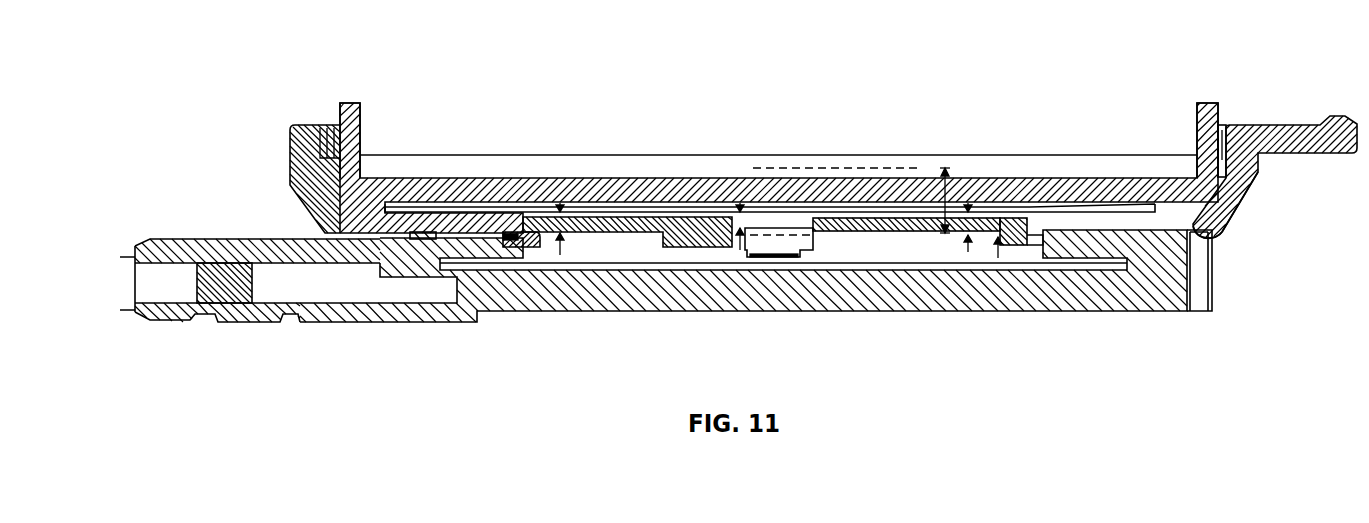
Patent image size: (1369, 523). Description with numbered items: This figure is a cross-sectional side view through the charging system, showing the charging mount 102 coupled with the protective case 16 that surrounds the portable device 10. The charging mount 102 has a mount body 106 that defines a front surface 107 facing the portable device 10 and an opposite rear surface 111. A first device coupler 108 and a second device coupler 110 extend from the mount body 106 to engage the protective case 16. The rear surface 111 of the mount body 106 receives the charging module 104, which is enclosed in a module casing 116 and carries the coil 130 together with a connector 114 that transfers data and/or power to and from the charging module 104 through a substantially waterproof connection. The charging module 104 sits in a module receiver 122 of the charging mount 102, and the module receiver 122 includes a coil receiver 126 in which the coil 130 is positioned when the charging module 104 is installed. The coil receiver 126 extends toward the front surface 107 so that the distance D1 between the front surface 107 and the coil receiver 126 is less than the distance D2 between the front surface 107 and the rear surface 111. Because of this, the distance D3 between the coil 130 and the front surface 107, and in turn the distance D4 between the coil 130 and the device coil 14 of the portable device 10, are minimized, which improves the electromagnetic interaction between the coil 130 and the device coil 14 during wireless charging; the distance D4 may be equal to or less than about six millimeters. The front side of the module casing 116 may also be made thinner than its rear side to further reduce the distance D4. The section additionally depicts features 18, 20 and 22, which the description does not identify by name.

The portable device 10 is at (928, 155).
The device coil 14 is at (780, 168).
The protective case 16 is at (1203, 103).
The clip portion 18 is at (1222, 125).
The seal 20 is at (335, 172).
The seal leg 22 is at (372, 218).
The charging mount 102 is at (1238, 205).
The charging module 104 is at (1113, 312).
The mount body 106 is at (1205, 233).
The front surface 107 is at (425, 207).
The first device coupler 108 is at (1300, 125).
The second device coupler 110 is at (310, 127).
The rear surface 111 is at (413, 239).
The connector 114 is at (210, 239).
The module casing 116 is at (528, 305).
The module receiver 122 is at (998, 240).
The coil receiver 126 is at (572, 233).
The coil 130 is at (912, 237).
The distance between front surface and coil receiver D1 is at (735, 203).
The distance between front surface and rear surface D2 is at (555, 205).
The distance between coil and front surface D3 is at (998, 238).
The distance between coil and device coil D4 is at (968, 237).